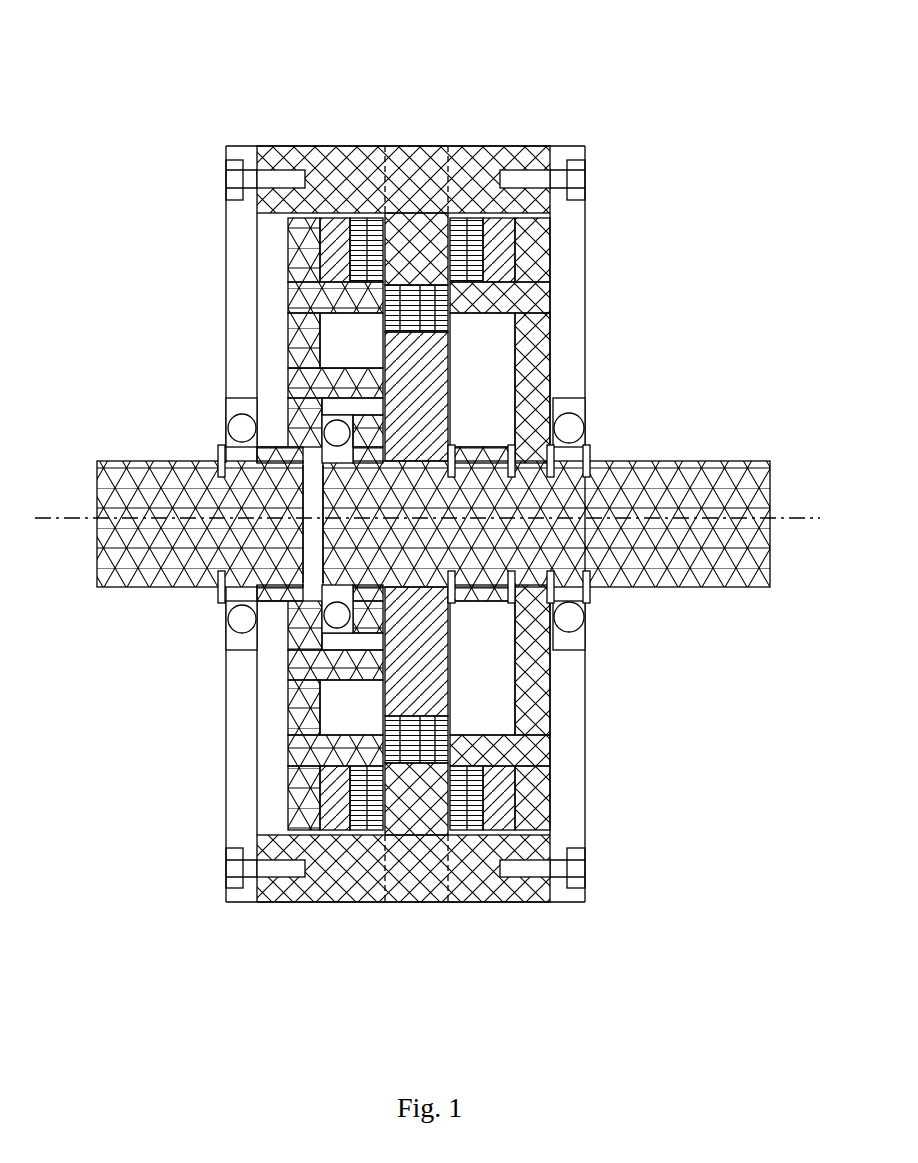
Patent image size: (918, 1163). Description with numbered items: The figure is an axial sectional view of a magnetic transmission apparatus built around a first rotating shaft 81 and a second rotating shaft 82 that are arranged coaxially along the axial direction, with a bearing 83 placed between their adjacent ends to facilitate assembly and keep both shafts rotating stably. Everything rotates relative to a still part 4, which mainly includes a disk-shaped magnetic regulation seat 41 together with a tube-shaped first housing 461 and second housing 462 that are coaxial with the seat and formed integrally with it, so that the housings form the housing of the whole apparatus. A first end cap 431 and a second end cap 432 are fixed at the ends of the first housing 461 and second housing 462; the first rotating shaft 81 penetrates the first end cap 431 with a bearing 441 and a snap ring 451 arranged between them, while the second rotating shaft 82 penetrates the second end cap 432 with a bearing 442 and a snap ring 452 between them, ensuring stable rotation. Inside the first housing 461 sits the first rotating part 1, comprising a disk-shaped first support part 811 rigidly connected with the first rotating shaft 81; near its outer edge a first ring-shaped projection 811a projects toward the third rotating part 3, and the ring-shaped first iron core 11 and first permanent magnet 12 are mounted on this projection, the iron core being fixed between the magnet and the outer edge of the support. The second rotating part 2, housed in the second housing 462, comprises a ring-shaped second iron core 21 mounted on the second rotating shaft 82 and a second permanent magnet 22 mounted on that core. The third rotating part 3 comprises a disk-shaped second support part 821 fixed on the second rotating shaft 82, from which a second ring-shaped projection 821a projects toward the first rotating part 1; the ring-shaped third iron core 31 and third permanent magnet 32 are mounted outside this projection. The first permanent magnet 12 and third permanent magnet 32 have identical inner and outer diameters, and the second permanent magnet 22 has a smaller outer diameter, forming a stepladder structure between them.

The first rotating part 1 is at (227, 796).
The first iron core 11 is at (337, 801).
The first permanent magnet 12 is at (370, 806).
The second rotating part 2 is at (563, 524).
The second iron core 21 is at (417, 378).
The second permanent magnet 22 is at (411, 310).
The third rotating part 3 is at (586, 778).
The third iron core 31 is at (492, 805).
The third permanent magnet 32 is at (468, 806).
The still part 4 is at (415, 131).
The magnetic regulation seat 41 is at (423, 204).
The first end cap 431 is at (248, 768).
The second end cap 432 is at (567, 713).
The bearing 441 is at (242, 430).
The bearing 442 is at (570, 632).
The snap ring 451 is at (220, 455).
The snap ring 452 is at (590, 596).
The first housing 461 is at (327, 178).
The second housing 462 is at (479, 180).
The first rotating shaft 81 is at (176, 527).
The first support part 811 is at (306, 740).
The first ring-shaped projection 811a is at (350, 297).
The second rotating shaft 82 is at (636, 526).
The second support part 821 is at (531, 738).
The second ring-shaped projection 821a is at (474, 294).
The bearing 83 is at (337, 628).